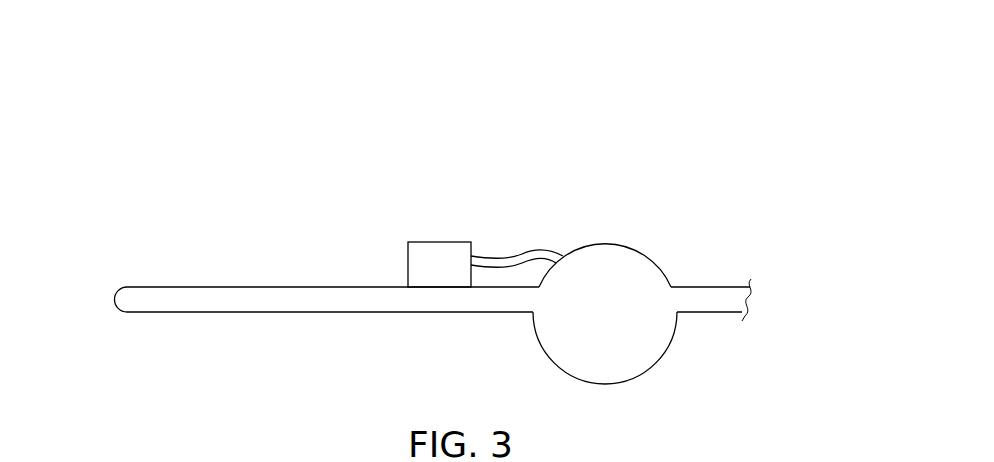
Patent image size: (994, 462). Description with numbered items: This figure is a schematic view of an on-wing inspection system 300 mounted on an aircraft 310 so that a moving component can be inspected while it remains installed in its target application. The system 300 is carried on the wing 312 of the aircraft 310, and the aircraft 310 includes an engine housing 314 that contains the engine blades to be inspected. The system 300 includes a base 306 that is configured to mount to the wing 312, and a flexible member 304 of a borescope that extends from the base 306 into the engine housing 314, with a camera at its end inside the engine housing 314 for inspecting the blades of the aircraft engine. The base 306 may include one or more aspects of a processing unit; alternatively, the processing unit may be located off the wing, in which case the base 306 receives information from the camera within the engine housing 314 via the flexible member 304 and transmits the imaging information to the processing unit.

The system 300 is at (472, 158).
The flexible member 304 is at (523, 250).
The base 306 is at (441, 242).
The aircraft 310 is at (740, 250).
The wing 312 is at (347, 313).
The engine housing 314 is at (615, 243).